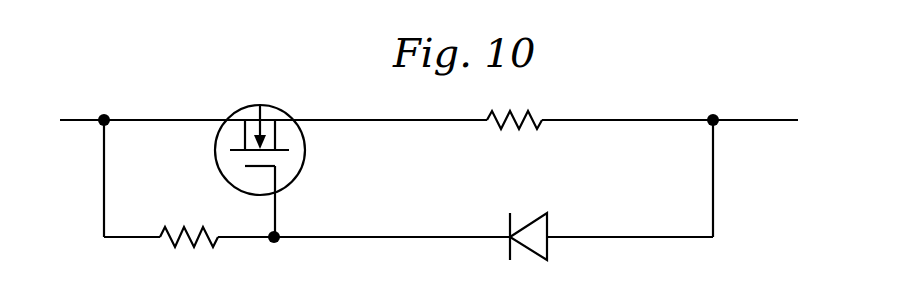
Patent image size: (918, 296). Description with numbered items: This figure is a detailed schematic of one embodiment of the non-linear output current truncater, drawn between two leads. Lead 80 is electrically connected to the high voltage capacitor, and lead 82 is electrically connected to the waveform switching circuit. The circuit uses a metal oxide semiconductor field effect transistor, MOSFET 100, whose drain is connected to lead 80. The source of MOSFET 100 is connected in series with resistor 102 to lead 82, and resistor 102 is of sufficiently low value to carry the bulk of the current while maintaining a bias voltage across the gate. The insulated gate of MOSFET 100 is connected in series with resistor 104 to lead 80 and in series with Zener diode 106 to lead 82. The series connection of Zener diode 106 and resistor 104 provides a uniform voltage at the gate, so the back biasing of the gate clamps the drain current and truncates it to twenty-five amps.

The lead 80 is at (76, 120).
The lead 82 is at (757, 120).
The metal oxide semiconductor field effect transistor (MOSFET) 100 is at (270, 107).
The resistor 102 is at (528, 112).
The resistor 104 is at (192, 247).
The Zener diode 106 is at (550, 219).